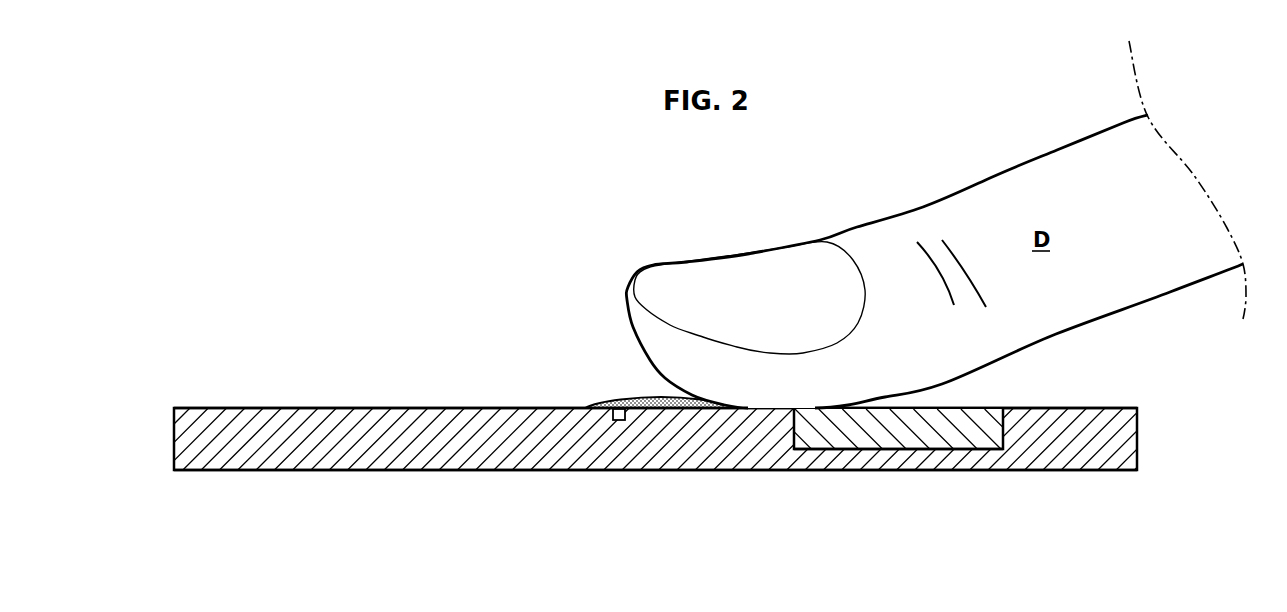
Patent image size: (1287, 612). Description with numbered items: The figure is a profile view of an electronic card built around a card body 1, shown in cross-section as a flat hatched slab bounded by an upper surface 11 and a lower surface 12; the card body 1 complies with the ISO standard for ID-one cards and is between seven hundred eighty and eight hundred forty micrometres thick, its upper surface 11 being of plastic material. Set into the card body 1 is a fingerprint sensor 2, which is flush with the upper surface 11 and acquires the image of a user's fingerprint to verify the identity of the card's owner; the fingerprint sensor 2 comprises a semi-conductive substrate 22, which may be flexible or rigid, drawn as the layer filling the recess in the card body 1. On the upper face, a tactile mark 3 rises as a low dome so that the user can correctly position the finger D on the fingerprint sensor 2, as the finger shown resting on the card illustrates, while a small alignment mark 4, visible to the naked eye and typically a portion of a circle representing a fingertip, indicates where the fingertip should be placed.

The card body 1 is at (172, 438).
The upper surface 11 is at (382, 407).
The lower surface 12 is at (382, 472).
The fingerprint sensor 2 is at (898, 455).
The semi-conductive substrate 22 is at (945, 429).
The tactile mark 3 is at (654, 390).
The alignment mark 4 is at (615, 421).